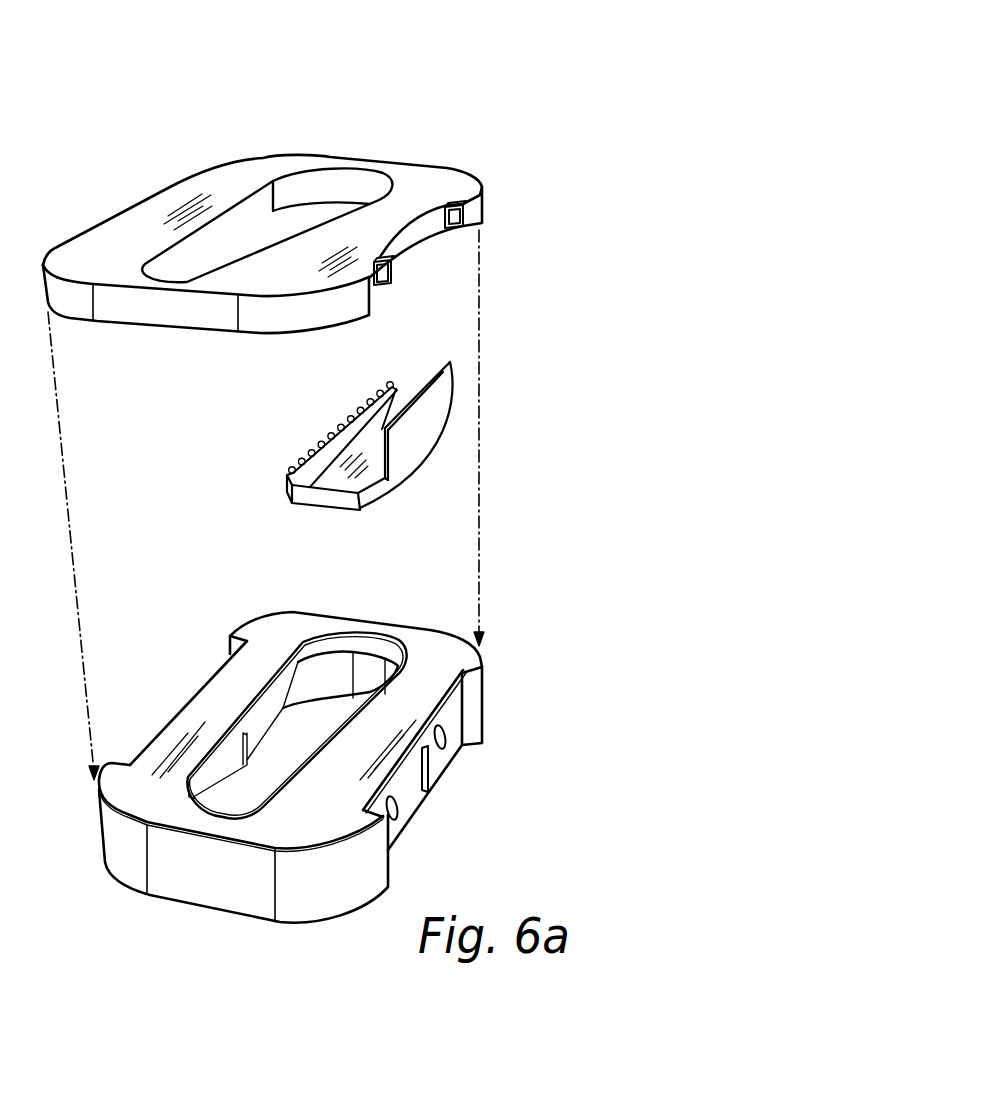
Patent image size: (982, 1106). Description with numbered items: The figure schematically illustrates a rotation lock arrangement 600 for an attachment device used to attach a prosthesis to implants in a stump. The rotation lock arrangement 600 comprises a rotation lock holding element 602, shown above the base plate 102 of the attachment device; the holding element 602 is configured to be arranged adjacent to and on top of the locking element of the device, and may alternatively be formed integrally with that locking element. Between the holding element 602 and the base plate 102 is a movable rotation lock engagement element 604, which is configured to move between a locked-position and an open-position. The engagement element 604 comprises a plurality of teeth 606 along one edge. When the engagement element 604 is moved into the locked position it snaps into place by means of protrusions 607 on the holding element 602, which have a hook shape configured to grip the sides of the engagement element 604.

The rotation lock arrangement 600 is at (528, 121).
The rotation lock holding element 602 is at (418, 190).
The rotation lock engagement element 604 is at (428, 399).
The teeth 606 is at (330, 440).
The protrusions 607 is at (464, 213).
The base plate 102 is at (212, 883).